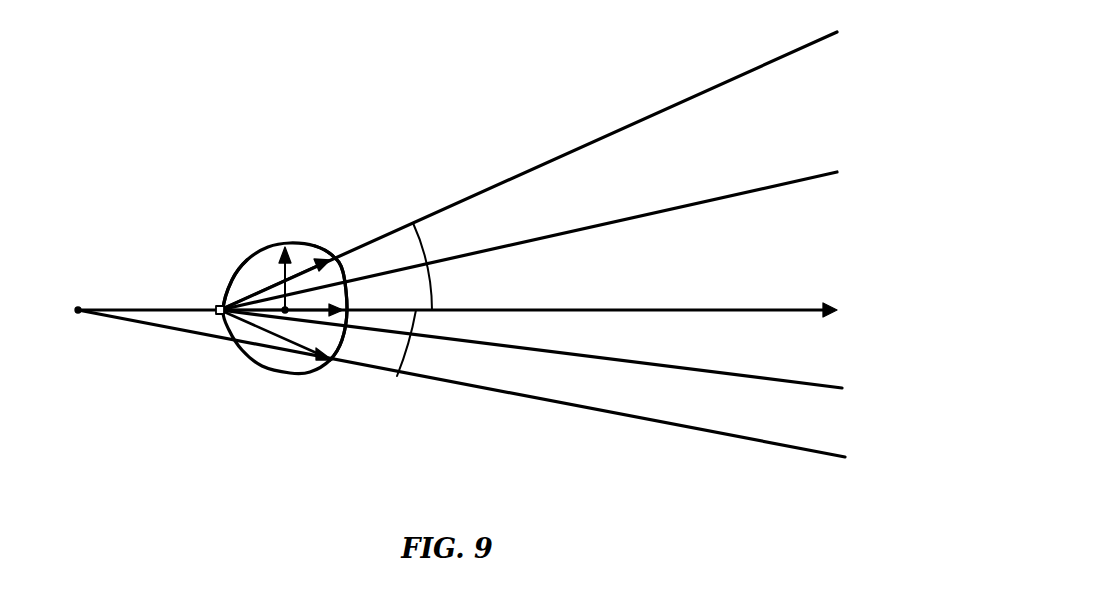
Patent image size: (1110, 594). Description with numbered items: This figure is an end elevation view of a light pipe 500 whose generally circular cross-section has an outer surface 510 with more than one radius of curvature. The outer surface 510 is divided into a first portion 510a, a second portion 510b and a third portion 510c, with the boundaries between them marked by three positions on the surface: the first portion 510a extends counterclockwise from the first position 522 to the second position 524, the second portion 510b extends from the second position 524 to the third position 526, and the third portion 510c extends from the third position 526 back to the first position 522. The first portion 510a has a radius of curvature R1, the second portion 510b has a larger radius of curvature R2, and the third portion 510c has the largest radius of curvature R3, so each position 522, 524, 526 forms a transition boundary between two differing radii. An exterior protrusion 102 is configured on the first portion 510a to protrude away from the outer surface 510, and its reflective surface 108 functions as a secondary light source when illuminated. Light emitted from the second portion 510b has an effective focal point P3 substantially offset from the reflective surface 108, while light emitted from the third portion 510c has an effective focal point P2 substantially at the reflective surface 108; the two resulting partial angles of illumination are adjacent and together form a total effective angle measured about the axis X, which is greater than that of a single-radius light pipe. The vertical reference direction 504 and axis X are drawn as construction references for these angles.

The light pipe 500 is at (205, 80).
The outer surface 510 is at (242, 247).
The first portion 510a is at (228, 280).
The second portion 510b is at (350, 325).
The third portion 510c is at (343, 272).
The vertical reference direction 504 is at (274, 246).
The first position 522 is at (337, 255).
The second position 524 is at (333, 360).
The third position 526 is at (350, 303).
The radius of curvature of first portion R1 is at (247, 254).
The radius of curvature of second portion R2 is at (279, 348).
The radius of curvature of third portion R3 is at (305, 256).
The effective focal point P2 is at (222, 285).
The effective focal point P3 is at (83, 297).
The exterior protrusion 102 is at (216, 307).
The reflective surface 108 is at (237, 350).
The X axis X is at (470, 311).